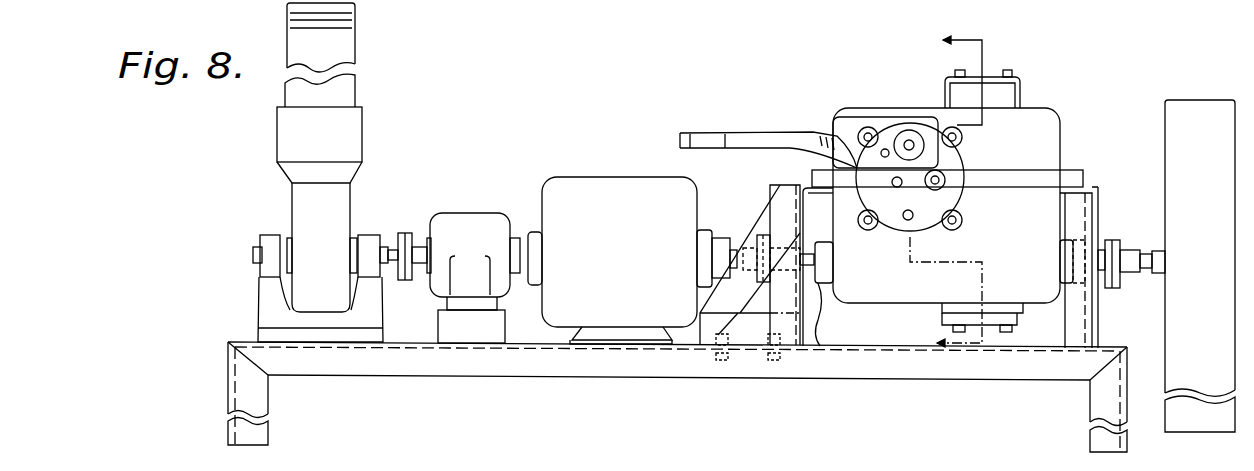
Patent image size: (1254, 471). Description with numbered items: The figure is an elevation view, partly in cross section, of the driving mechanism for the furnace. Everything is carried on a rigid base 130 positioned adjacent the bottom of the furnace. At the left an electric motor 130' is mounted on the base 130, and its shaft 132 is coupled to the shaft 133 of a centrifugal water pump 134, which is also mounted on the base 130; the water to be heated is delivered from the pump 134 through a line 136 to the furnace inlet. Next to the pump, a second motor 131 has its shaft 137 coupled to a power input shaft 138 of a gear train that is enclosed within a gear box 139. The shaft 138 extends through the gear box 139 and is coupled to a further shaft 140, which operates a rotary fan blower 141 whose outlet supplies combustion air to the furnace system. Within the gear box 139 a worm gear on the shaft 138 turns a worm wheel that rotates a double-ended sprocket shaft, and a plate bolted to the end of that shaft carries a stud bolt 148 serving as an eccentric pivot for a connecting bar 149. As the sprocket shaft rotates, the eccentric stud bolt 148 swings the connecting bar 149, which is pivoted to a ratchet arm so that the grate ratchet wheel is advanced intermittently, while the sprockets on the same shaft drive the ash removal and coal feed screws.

The rigid base 130 is at (645, 397).
The electric motor 130' is at (473, 262).
The second motor 131 is at (608, 195).
The shaft 132 is at (420, 246).
The shaft 133 is at (386, 233).
The centrifugal water pump 134 is at (307, 202).
The line 136 is at (340, 37).
The shaft 137 is at (737, 254).
The power input shaft 138 is at (806, 268).
The gear box 139 is at (1030, 127).
The shaft 140 is at (1147, 250).
The rotary fan blower 141 is at (1193, 113).
The stud bolt 148 is at (908, 142).
The connecting bar 149 is at (770, 142).